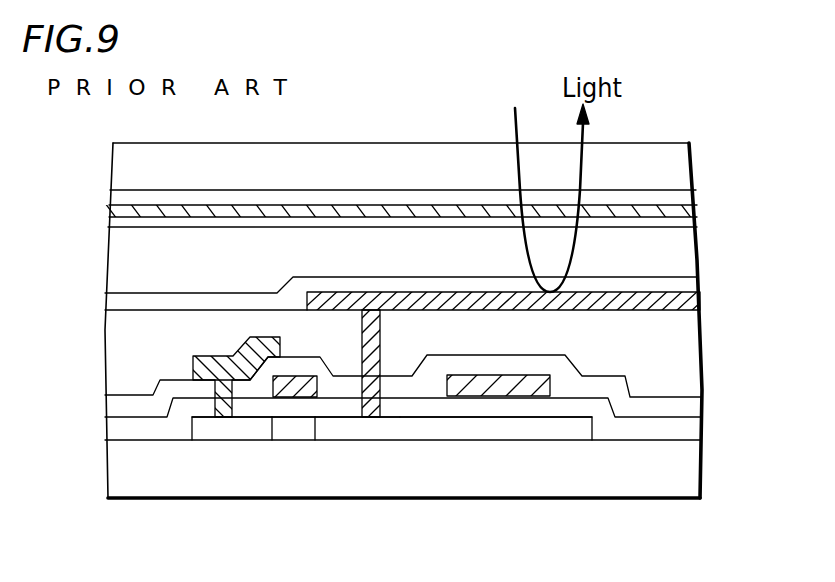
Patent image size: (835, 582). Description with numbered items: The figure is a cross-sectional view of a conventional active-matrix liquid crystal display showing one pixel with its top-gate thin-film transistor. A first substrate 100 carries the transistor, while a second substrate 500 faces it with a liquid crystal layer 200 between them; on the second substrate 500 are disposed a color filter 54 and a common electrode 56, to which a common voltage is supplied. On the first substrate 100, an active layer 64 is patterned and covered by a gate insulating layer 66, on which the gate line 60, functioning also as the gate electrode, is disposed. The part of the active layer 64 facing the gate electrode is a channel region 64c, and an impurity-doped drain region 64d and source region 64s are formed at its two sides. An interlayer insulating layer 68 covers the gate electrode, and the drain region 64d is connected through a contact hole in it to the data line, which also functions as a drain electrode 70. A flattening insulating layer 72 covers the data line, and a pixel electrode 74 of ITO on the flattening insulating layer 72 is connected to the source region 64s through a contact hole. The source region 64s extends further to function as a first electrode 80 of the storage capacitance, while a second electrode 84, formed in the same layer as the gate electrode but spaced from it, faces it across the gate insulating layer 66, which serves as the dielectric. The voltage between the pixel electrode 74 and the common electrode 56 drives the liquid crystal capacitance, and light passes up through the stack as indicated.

The second substrate 500 is at (683, 154).
The color filter 54 is at (682, 193).
The common electrode 56 is at (687, 208).
The liquid crystal layer 200 is at (687, 257).
The pixel electrode 74 is at (700, 297).
The flattening insulating layer 72 is at (690, 355).
The interlayer insulating layer 68 is at (693, 402).
The gate insulating layer 66 is at (690, 428).
The first substrate 100 is at (690, 470).
The drain electrode 70 is at (197, 356).
The active layer 64 is at (192, 418).
The drain region 64d is at (205, 428).
The gate line 60 is at (282, 377).
The channel region 64c is at (293, 428).
The source region 64s is at (370, 428).
The first electrode 80 is at (477, 428).
The second electrode 84 is at (538, 390).